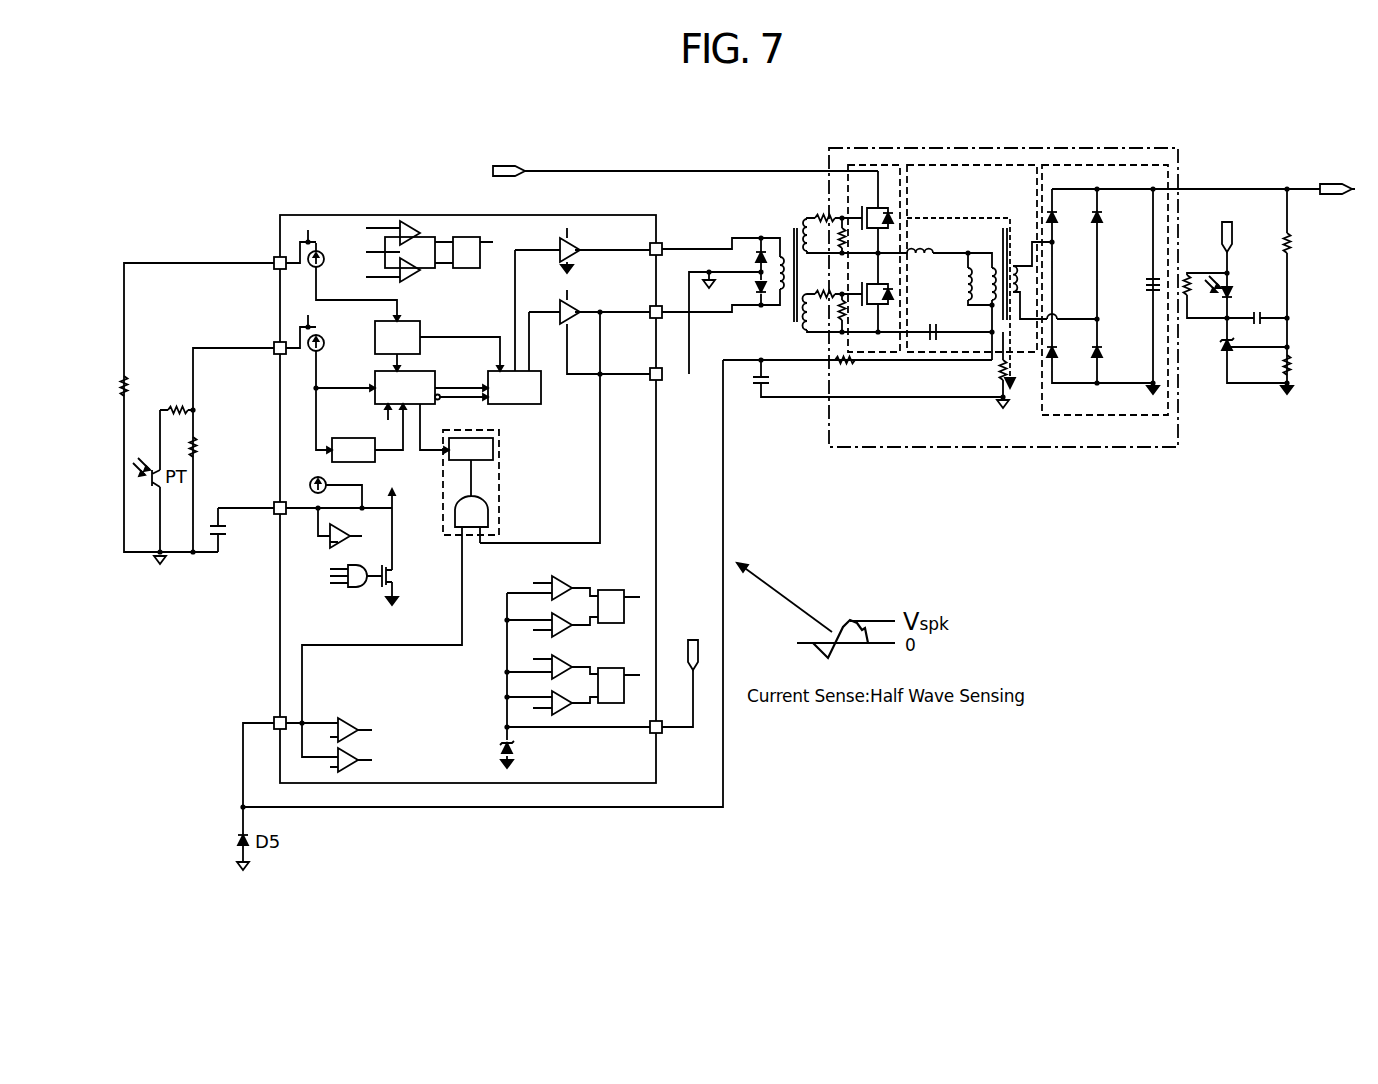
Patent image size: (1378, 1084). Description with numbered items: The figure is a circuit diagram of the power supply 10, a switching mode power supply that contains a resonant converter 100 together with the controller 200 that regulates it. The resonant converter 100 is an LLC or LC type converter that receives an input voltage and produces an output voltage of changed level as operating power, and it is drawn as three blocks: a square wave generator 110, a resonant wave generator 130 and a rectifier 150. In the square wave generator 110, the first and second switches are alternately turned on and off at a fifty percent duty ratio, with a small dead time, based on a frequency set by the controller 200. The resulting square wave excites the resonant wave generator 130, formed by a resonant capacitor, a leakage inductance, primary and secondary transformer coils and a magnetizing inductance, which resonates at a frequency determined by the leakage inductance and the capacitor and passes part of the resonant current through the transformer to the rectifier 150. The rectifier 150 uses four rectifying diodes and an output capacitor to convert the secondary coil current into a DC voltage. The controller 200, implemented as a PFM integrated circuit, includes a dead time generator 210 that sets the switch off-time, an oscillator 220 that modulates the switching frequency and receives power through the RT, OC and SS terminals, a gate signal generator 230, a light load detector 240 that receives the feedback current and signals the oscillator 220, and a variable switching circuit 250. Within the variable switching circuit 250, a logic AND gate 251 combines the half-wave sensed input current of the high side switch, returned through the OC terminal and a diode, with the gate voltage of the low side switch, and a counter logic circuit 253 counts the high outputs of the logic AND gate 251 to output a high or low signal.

The power supply 10 is at (1079, 302).
The resonant converter 100 is at (1045, 302).
The square wave generator 110 is at (873, 354).
The resonant wave generator 130 is at (972, 354).
The rectifier 150 is at (1105, 417).
The controller 200 is at (367, 391).
The dead time generator 210 is at (412, 335).
The oscillator 220 is at (438, 380).
The gate signal generator 230 is at (518, 398).
The light load detector 240 is at (370, 458).
The variable switching circuit 250 is at (439, 593).
The logic AND gate 251 is at (482, 518).
The counter logic circuit 253 is at (493, 446).